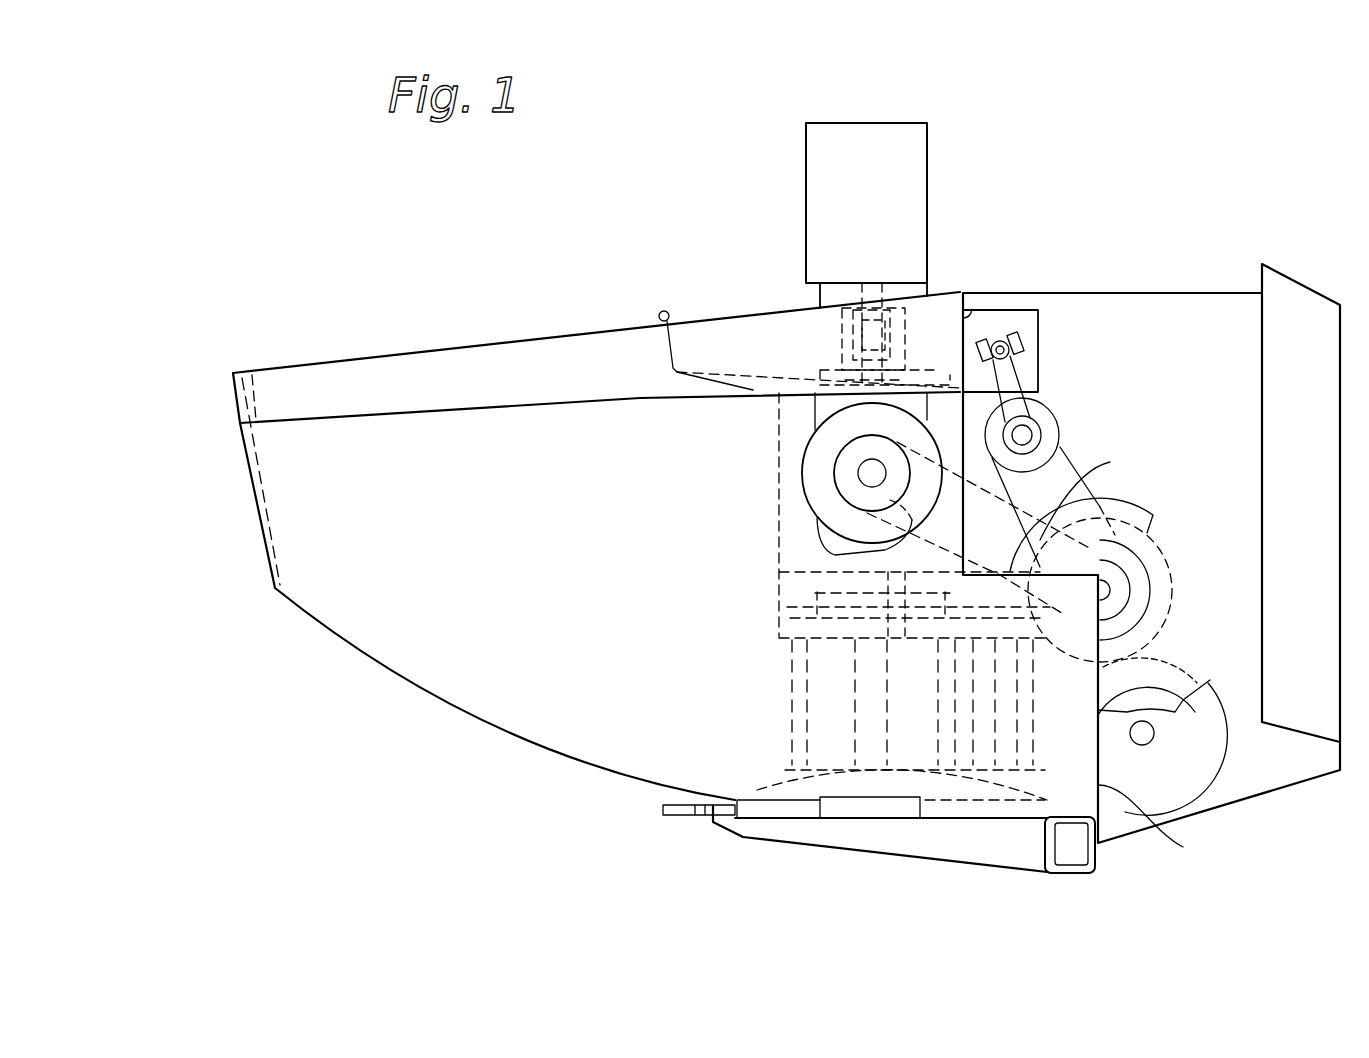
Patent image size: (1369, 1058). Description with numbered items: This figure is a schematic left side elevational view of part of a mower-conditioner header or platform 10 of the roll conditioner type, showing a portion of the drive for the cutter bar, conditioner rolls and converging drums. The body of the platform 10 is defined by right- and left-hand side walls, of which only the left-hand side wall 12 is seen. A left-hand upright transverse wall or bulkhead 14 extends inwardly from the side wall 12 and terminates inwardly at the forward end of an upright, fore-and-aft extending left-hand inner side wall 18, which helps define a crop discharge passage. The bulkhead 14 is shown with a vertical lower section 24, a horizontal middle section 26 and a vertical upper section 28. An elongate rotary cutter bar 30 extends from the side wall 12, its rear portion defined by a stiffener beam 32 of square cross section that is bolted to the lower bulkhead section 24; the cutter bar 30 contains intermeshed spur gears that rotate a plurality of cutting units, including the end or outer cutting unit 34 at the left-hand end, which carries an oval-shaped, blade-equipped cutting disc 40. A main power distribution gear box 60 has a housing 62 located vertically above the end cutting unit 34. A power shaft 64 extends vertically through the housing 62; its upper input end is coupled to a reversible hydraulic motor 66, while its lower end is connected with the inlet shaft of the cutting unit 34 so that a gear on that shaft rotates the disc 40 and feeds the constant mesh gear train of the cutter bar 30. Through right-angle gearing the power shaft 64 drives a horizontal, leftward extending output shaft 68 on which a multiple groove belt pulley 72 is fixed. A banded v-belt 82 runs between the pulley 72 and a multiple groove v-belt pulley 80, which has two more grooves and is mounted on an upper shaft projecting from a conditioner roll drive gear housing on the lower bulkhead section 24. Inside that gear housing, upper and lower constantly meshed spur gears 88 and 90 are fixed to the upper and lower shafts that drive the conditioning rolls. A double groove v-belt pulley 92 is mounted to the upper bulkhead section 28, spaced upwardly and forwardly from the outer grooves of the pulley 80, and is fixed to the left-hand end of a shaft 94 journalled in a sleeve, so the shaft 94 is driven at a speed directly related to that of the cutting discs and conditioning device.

The mower-conditioner header or platform 10 is at (1187, 157).
The left-hand side wall 12 is at (508, 553).
The left-hand upright transverse wall or bulkhead 14 is at (969, 392).
The left-hand inner side wall 18 is at (1178, 362).
The vertical lower section of bulkhead 24 is at (1166, 827).
The horizontal middle section of bulkhead 26 is at (1003, 570).
The vertical upper section of bulkhead 28 is at (970, 315).
The rotary cutter bar 30 is at (790, 842).
The stiffener beam 32 is at (1100, 863).
The end or outer cutting unit 34 is at (660, 809).
The cutting disc 40 is at (757, 790).
The main power distribution gear box 60 is at (800, 471).
The housing 62 is at (800, 452).
The power shaft 64 is at (842, 345).
The reversible hydraulic motor 66 is at (806, 170).
The output shaft 68 is at (870, 474).
The multiple groove belt pulley 72 is at (830, 553).
The multiple groove v-belt pulley 80 is at (1172, 590).
The banded v-belt 82 is at (1072, 478).
The upper spur gear 88 is at (1158, 545).
The lower spur gear 90 is at (1167, 660).
The double groove v-belt pulley 92 is at (1058, 452).
The shaft 94 is at (1030, 428).